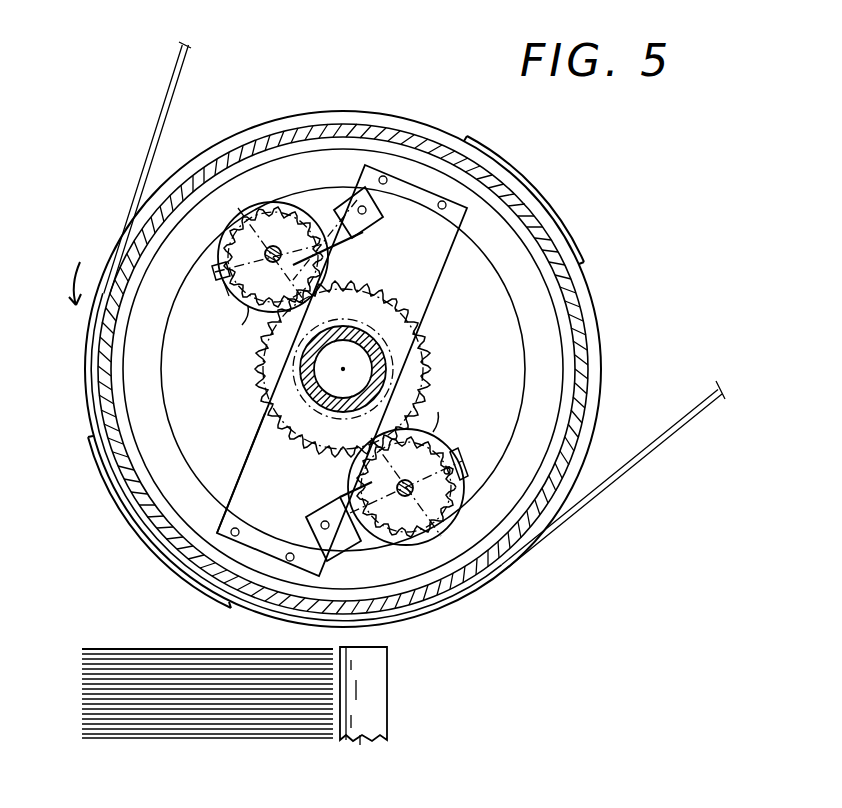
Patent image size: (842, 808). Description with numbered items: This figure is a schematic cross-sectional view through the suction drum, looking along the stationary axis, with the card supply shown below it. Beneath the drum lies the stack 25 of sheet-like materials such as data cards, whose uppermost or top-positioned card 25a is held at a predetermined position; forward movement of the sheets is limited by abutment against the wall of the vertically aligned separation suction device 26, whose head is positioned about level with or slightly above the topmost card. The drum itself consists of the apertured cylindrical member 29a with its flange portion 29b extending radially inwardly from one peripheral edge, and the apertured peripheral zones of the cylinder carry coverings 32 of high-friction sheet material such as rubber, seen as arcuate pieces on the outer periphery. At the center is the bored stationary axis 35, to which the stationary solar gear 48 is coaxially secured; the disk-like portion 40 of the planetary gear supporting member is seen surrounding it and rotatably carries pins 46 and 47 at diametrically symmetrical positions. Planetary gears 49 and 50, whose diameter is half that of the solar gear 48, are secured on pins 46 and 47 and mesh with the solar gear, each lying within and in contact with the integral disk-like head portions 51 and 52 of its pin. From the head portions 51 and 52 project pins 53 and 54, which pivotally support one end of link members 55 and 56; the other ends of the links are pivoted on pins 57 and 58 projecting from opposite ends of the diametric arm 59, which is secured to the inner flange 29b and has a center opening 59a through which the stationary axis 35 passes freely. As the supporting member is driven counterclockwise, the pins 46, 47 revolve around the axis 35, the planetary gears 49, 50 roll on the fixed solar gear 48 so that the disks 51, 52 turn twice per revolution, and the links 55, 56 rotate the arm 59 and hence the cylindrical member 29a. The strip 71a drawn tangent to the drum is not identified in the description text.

The stack 25 is at (206, 737).
The top-positioned card 25a is at (150, 648).
The separation suction device 26 is at (390, 702).
The cylindrical member 29a is at (590, 343).
The flange portion 29b is at (540, 330).
The coverings 32 is at (562, 218).
The bored stationary axis 35 is at (356, 346).
The disk-like portion 40 is at (570, 410).
The pin 46 is at (312, 287).
The pin 47 is at (412, 493).
The stationary solar gear 48 is at (430, 378).
The planetary gear 49 is at (262, 228).
The planetary gear 50 is at (415, 532).
The disk-like head portion 51 is at (242, 325).
The disk-like head portion 52 is at (433, 432).
The pin 53 is at (215, 292).
The pin 54 is at (455, 462).
The link member 55 is at (332, 215).
The link member 56 is at (348, 537).
The pin 57 is at (366, 224).
The pin 58 is at (324, 520).
The diametric arm 59 is at (426, 292).
The center opening 59a is at (272, 404).
The tape strip 71a is at (168, 107).